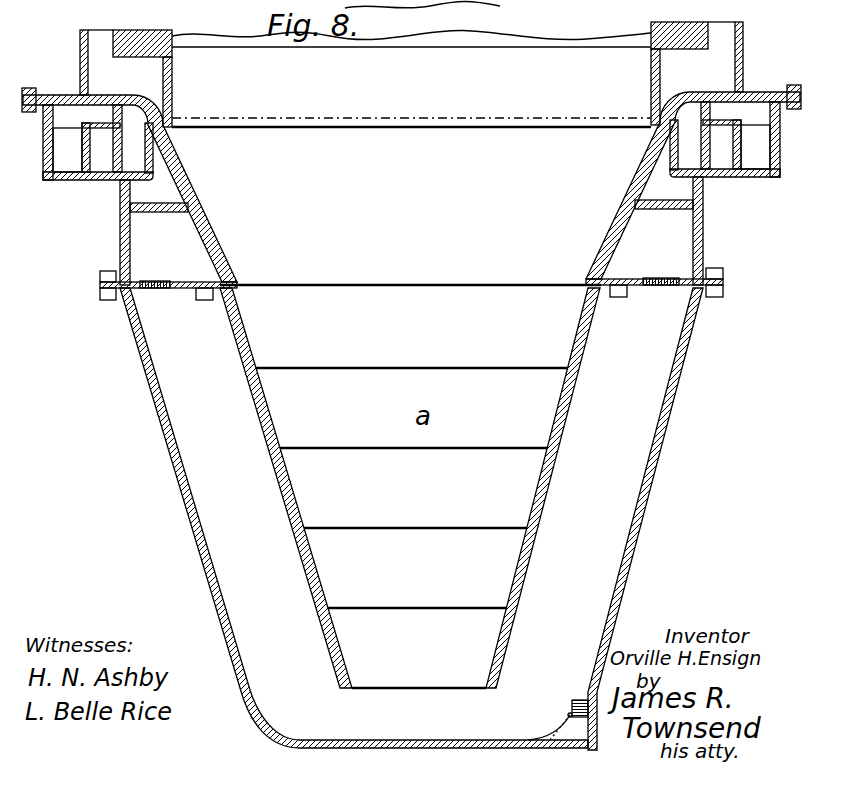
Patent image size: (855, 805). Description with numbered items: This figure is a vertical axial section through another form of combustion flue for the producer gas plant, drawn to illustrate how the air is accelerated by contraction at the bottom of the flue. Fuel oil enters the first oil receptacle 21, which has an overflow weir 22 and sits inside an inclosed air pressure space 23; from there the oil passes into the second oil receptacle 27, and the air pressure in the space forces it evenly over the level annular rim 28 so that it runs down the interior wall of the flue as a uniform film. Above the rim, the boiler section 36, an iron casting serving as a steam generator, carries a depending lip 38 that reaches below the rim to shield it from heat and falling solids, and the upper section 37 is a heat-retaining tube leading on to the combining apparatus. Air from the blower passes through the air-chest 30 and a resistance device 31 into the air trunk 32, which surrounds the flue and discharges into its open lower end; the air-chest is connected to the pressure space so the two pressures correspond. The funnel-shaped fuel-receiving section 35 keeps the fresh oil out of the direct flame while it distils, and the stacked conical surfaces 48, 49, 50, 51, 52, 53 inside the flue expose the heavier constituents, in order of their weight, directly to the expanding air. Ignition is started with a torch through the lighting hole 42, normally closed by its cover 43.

The first oil receptacle 21 is at (411, 146).
The overflow weir 22 is at (83, 133).
The inclosed air pressure space 23 is at (413, 148).
The second oil receptacle 27 is at (411, 137).
The level annular rim 28 is at (150, 112).
The air-chest 30 is at (411, 231).
The resistance device 31 is at (172, 285).
The air trunk 32 is at (411, 519).
The funnel-shaped fuel-receiving section 35 is at (196, 194).
The boiler section 36 is at (173, 74).
The upper section 37 is at (650, 36).
The depending lip 38 is at (368, 127).
The lighting hole 42 is at (566, 716).
The cover 43 is at (572, 708).
The conical surface 48 is at (410, 267).
The conical surface 49 is at (412, 351).
The conical surface 50 is at (413, 434).
The conical surface 51 is at (415, 511).
The conical surface 52 is at (417, 593).
The conical surface 53 is at (419, 674).